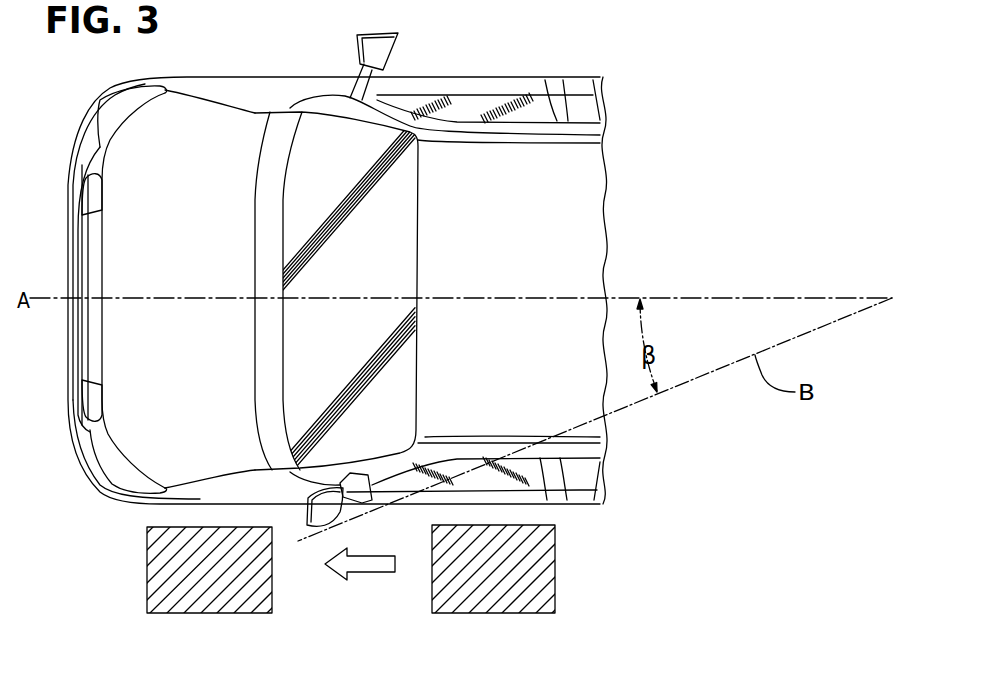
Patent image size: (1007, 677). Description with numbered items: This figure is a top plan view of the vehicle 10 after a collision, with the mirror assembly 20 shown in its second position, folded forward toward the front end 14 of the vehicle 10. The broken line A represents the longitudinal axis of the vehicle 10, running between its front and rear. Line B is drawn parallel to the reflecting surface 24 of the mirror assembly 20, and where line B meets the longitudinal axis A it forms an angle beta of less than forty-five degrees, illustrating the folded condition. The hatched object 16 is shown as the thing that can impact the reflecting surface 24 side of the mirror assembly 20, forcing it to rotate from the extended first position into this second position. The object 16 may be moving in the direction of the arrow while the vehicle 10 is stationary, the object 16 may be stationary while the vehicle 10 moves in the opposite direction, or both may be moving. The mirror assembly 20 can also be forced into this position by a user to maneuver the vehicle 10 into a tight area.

The vehicle 10 is at (710, 143).
The front end 14 is at (68, 372).
The object 16 is at (227, 604).
The mirror assembly 20 is at (297, 523).
The reflecting surface 24 is at (323, 523).